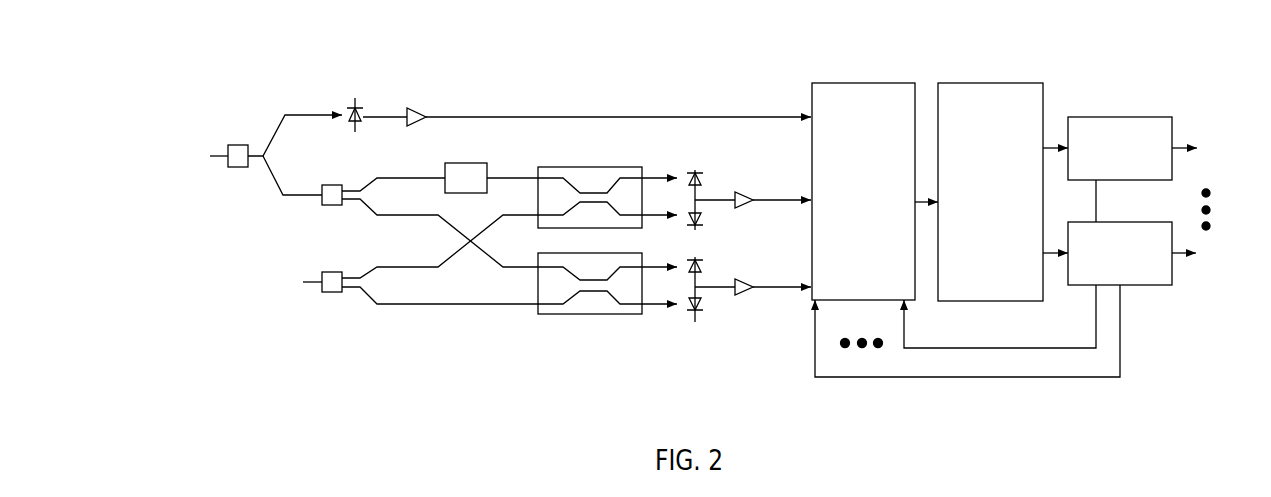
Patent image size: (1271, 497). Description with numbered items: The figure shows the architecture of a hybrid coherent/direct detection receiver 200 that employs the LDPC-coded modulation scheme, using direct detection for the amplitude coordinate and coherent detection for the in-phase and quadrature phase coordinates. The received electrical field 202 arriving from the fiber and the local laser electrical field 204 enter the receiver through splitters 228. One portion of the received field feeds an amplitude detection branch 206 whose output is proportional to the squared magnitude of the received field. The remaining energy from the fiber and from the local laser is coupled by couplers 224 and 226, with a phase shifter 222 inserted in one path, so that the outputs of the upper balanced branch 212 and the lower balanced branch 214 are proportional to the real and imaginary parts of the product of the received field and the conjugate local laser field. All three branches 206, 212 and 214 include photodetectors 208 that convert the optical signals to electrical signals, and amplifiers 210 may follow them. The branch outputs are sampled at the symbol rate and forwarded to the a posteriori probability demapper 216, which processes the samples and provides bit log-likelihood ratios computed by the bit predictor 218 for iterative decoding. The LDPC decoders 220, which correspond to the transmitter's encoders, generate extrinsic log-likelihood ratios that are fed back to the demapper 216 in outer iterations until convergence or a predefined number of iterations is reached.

The hybrid coherent/direct detection receiver 200 is at (706, 84).
The received electrical field 202 is at (172, 110).
The local laser electrical field 204 is at (210, 330).
The amplitude detection branch 206 is at (470, 115).
The photodetectors 208 is at (362, 107).
The amplifiers 210 is at (415, 108).
The upper balanced branch 212 is at (445, 170).
The lower balanced branch 214 is at (412, 317).
The a posteriori probability (APP) demapper 216 is at (893, 83).
The bit predictor (LLR calculation module) 218 is at (1017, 83).
The LDPC decoders 220 is at (1087, 117).
The phase shifter 222 is at (470, 163).
The coupler 224 is at (537, 200).
The coupler 226 is at (537, 283).
The splitters 228 is at (234, 167).